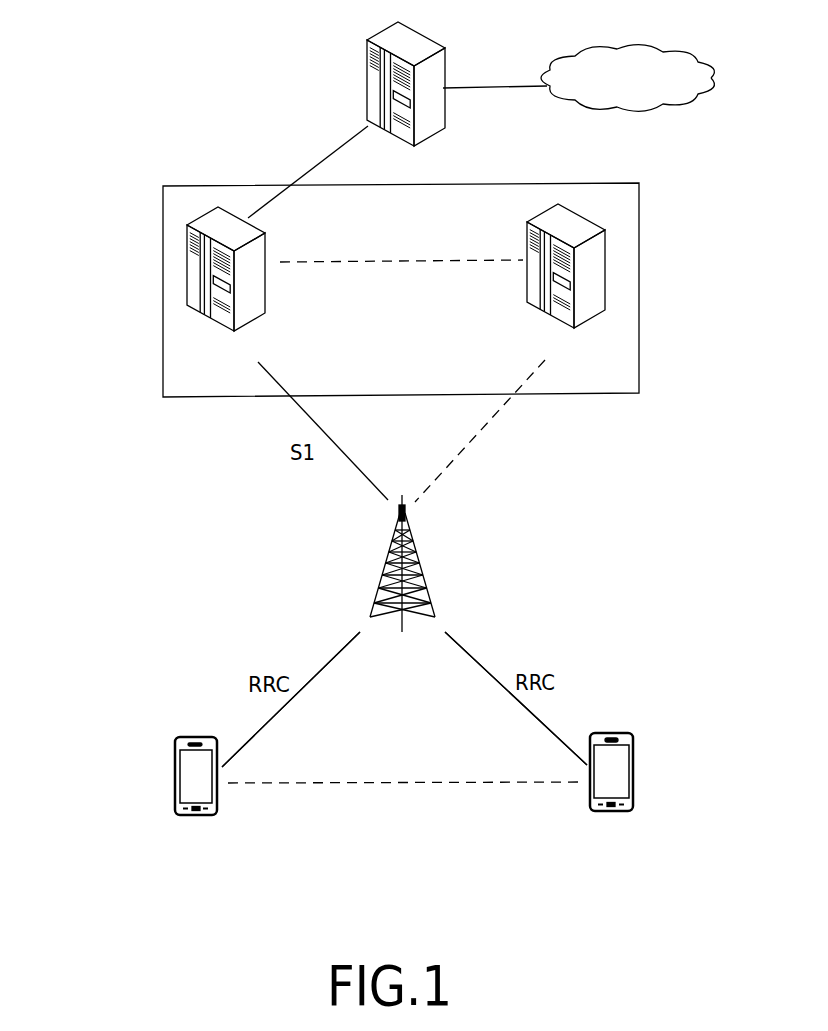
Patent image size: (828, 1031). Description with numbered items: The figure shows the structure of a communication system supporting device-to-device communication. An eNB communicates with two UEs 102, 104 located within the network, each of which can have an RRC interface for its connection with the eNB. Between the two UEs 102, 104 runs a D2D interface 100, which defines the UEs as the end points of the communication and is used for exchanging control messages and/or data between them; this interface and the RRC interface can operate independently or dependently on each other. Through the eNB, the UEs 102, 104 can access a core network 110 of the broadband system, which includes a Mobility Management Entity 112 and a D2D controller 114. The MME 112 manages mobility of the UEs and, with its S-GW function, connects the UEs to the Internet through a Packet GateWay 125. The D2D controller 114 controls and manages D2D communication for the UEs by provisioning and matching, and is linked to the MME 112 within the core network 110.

The D2D interface 100 is at (390, 788).
The UE 102 is at (175, 777).
The UE 104 is at (634, 773).
The core network 110 is at (640, 262).
The Mobility Management Entity 112 is at (266, 292).
The D2D controller 114 is at (527, 292).
The Packet GateWay 125 is at (366, 83).